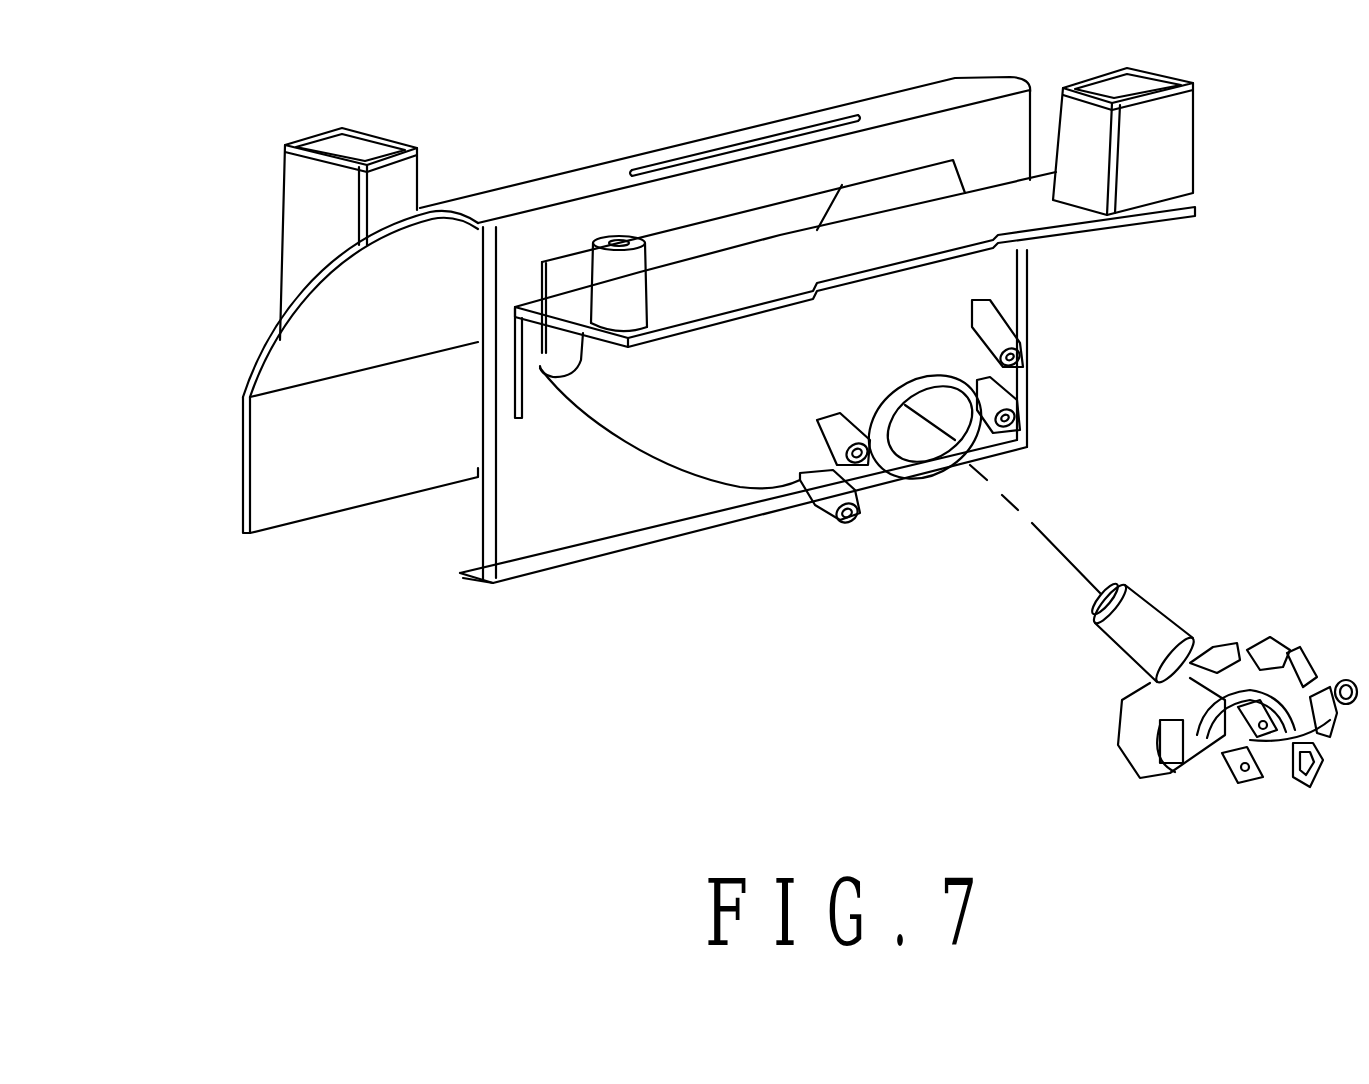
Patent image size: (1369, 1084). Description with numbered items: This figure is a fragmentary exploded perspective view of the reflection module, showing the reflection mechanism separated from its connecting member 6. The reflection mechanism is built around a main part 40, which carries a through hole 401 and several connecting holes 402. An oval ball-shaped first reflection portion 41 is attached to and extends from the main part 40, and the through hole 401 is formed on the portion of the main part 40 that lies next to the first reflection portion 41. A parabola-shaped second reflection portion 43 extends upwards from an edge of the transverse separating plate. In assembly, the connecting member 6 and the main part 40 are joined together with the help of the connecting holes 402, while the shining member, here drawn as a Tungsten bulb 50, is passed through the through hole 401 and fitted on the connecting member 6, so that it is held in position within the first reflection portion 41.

The second reflection portion 43 is at (330, 340).
The main part 40 is at (737, 500).
The first reflection portion 41 is at (648, 437).
The through hole 401 is at (923, 447).
The connecting holes 402 is at (836, 505).
The motor 50 is at (1157, 612).
The connecting member 6 is at (1133, 727).